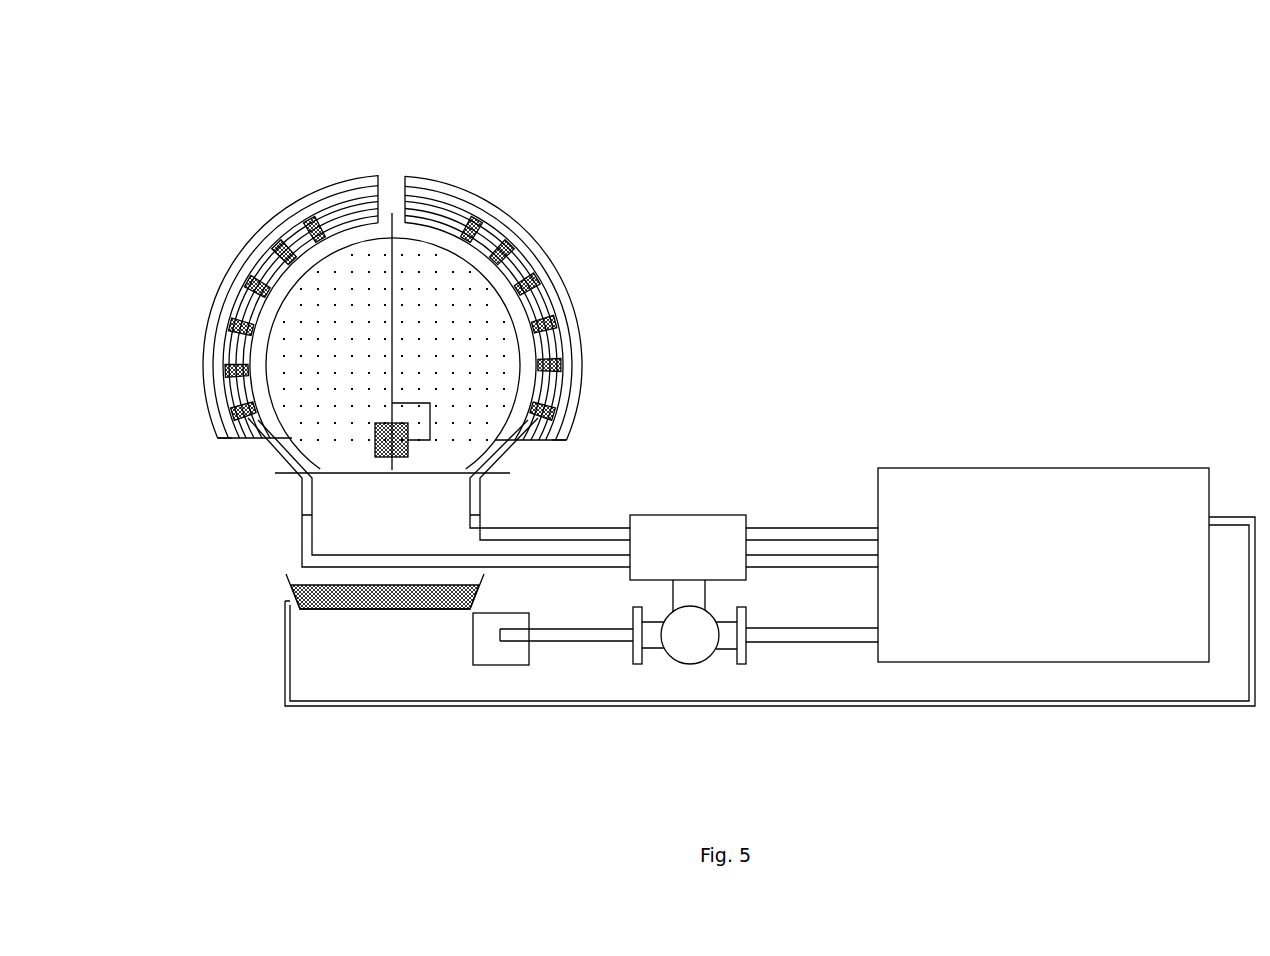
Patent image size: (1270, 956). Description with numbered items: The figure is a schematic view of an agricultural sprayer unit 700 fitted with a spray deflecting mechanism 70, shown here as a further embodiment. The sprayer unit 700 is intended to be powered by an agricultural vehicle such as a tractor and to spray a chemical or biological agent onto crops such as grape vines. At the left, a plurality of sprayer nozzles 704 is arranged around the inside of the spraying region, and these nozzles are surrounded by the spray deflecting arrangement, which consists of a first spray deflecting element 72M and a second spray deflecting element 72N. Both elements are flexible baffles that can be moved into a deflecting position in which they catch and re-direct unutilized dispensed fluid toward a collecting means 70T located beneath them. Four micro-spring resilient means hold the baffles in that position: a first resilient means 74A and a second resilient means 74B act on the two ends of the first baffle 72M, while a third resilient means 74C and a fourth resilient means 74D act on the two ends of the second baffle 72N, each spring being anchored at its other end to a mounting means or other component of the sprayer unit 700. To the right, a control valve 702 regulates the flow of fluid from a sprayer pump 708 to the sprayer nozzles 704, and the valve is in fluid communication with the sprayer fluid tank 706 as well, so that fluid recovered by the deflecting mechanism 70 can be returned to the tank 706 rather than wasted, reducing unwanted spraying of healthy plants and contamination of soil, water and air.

The spray deflecting mechanism 70 is at (357, 106).
The agricultural sprayer unit 700 is at (800, 120).
The first spray deflecting element 72M is at (218, 278).
The second spray deflecting element 72N is at (568, 298).
The first resilient means 74A is at (378, 190).
The second resilient means 74B is at (225, 437).
The third resilient means 74C is at (405, 190).
The fourth resilient means 74D is at (545, 440).
The sprayer nozzles 704 is at (318, 236).
The collecting means 70T is at (385, 605).
The control valve 702 is at (685, 535).
The sprayer fluid tank 706 is at (1033, 520).
The sprayer pump 708 is at (690, 648).